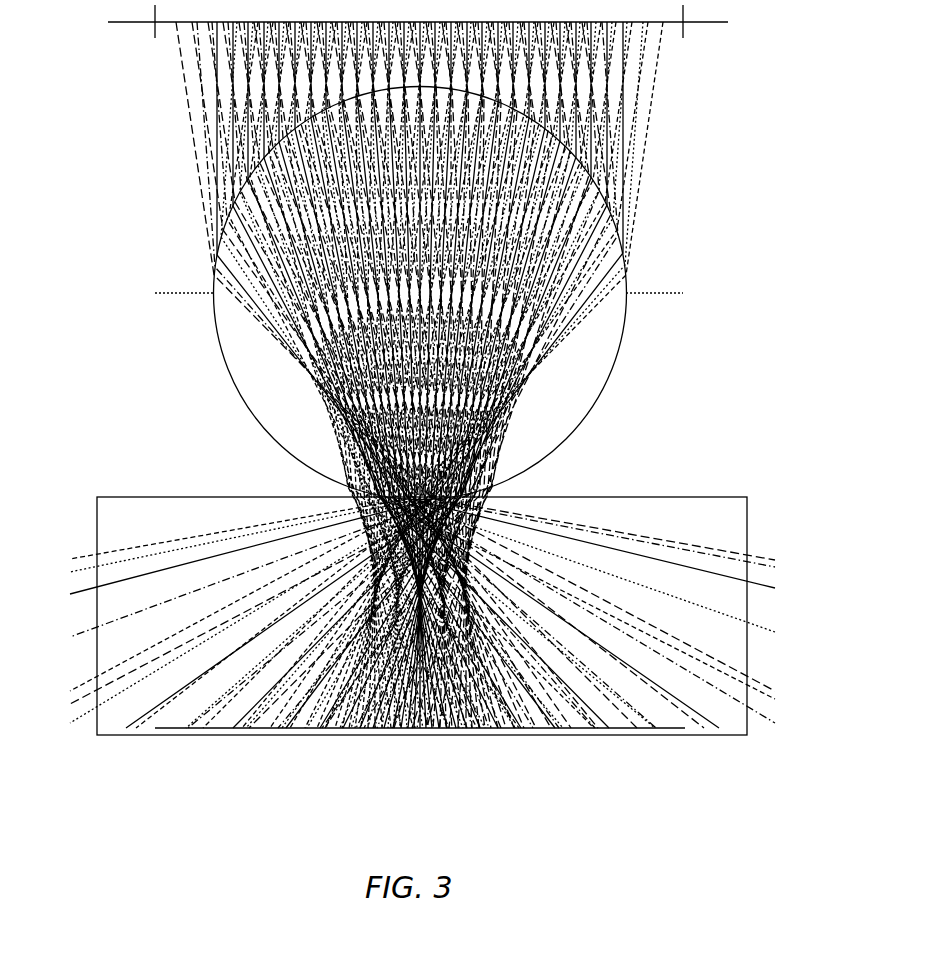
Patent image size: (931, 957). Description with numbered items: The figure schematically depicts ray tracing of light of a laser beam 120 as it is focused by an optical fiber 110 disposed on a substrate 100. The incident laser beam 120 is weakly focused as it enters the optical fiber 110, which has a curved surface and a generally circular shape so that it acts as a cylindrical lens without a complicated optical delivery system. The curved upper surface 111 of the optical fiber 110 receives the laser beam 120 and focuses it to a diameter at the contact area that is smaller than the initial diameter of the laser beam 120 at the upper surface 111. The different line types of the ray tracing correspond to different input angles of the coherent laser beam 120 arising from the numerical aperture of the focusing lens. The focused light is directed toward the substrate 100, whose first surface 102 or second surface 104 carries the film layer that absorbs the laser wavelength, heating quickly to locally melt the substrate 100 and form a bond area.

The substrate 100 is at (72, 432).
The first surface 102 is at (697, 497).
The second surface 104 is at (212, 735).
The optical fiber 110 is at (646, 345).
The upper surface 111 is at (248, 186).
The laser beam 120 is at (734, 158).